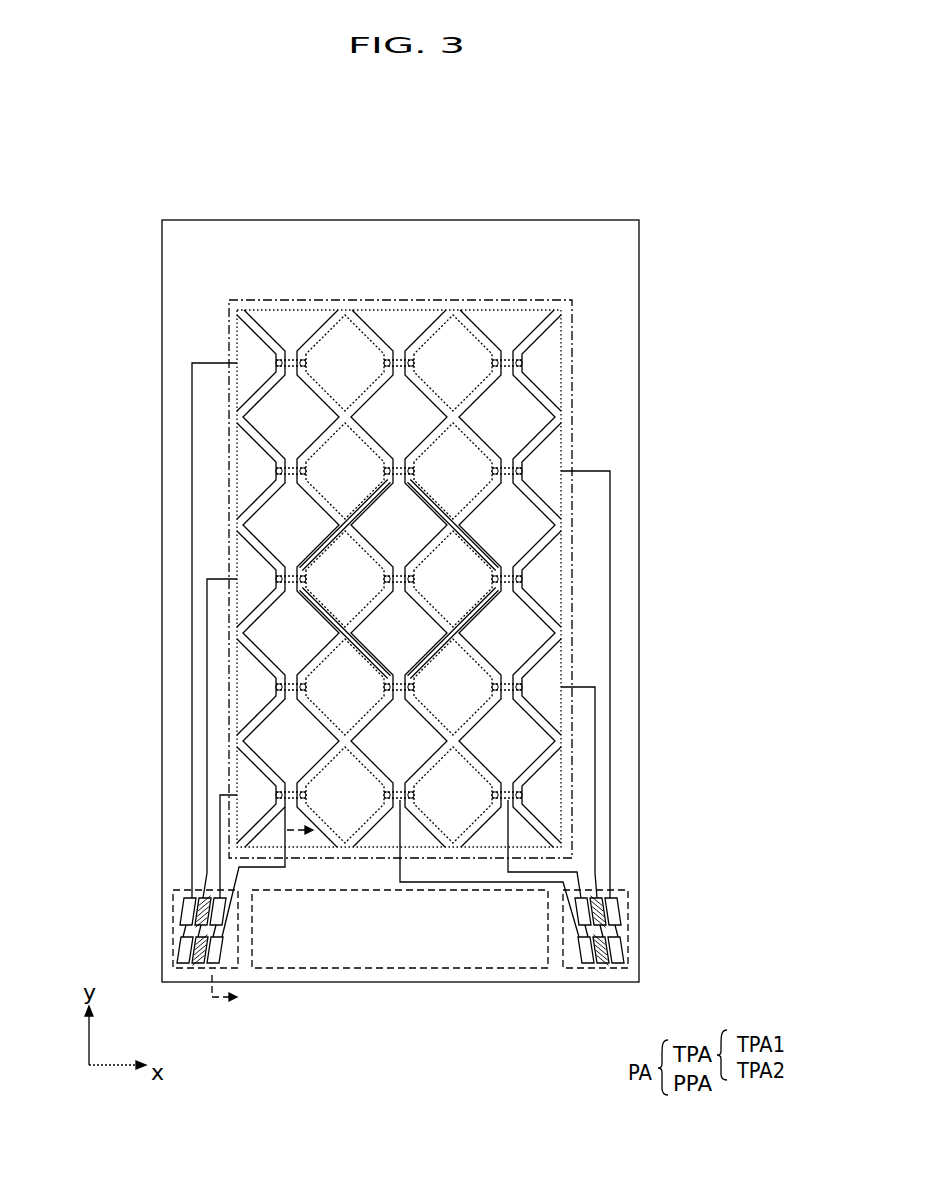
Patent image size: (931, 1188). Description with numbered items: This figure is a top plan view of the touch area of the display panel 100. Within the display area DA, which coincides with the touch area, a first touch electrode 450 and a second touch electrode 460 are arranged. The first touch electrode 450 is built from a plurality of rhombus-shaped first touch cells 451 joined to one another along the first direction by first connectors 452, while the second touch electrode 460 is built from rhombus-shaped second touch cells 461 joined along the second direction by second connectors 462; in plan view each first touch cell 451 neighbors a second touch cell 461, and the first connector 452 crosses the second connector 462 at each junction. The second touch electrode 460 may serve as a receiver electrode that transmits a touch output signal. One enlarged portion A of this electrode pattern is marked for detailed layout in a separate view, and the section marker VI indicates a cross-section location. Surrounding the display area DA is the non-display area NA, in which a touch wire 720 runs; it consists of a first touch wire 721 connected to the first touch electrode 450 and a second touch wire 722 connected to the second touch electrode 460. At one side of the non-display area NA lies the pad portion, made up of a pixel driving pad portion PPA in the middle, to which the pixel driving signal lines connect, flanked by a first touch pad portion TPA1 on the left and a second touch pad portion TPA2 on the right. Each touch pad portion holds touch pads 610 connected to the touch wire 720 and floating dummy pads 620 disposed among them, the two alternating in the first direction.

The display panel 100 is at (607, 219).
The first touch electrode 450 is at (399, 489).
The first touch cells 451 is at (349, 340).
The first connectors 452 is at (399, 352).
The second touch electrode 460 is at (519, 579).
The second touch cells 461 is at (525, 513).
The second connectors 462 is at (552, 550).
The touch pad 610 is at (183, 912).
The dummy pad 620 is at (206, 889).
The touch wire 720 is at (408, 769).
The first touch wire 721 is at (207, 758).
The second touch wire 722 is at (245, 876).
The portion A is at (490, 617).
The display area DA is at (574, 353).
The first touch pad portion TPA1 is at (176, 972).
The second touch pad portion TPA2 is at (601, 972).
The pixel driving pad portion PPA is at (398, 970).
The non-display area NA is at (523, 983).
The section line VI-VI' VI is at (269, 905).